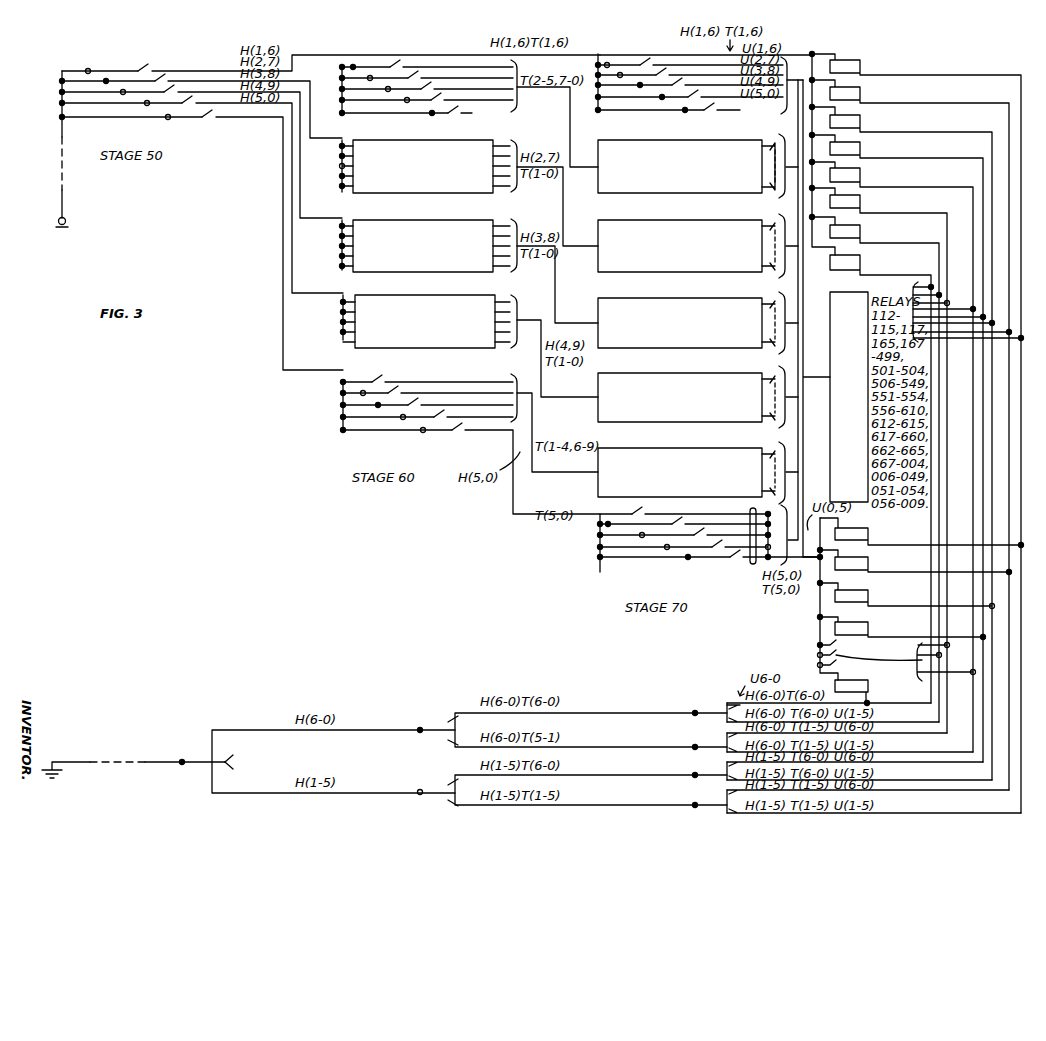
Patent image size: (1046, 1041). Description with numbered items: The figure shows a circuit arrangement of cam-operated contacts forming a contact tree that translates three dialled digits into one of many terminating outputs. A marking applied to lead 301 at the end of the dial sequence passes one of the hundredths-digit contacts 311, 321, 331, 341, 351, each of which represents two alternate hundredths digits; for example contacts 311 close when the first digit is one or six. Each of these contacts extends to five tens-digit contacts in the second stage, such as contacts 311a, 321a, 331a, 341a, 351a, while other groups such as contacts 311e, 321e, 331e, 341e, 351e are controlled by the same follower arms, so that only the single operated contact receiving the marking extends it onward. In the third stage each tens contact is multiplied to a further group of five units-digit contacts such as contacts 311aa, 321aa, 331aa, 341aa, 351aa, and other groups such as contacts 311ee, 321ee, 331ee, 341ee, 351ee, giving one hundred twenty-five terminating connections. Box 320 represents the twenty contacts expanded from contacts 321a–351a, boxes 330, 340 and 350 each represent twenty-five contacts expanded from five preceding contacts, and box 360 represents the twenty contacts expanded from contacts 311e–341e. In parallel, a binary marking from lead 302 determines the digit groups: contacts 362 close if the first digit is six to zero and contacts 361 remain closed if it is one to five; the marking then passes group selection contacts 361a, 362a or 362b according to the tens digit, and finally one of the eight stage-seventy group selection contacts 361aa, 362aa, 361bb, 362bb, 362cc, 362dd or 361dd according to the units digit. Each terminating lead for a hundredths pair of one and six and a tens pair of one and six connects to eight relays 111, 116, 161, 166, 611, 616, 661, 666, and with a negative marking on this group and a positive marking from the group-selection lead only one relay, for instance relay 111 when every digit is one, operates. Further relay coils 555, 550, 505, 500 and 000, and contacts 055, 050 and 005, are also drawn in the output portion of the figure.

The lead 301 is at (58, 130).
The lead 302 is at (150, 762).
The contacts 311 is at (123, 62).
The contacts 321 is at (150, 72).
The contacts 331 is at (166, 82).
The contacts 341 is at (182, 101).
The contacts 351 is at (204, 104).
The contacts 311a is at (383, 56).
The contacts 321a is at (401, 69).
The contacts 331a is at (421, 82).
The contacts 341a is at (434, 95).
The contacts 351a is at (451, 109).
The contacts 311aa is at (623, 56).
The contacts 321aa is at (651, 68).
The contacts 331aa is at (669, 79).
The contacts 341aa is at (687, 90).
The contacts 351aa is at (703, 103).
The contacts 311e is at (373, 376).
The contacts 321e is at (390, 386).
The contacts 331e is at (411, 398).
The contacts 341e is at (434, 416).
The contacts 351e is at (455, 418).
The contacts 311ee is at (635, 517).
The contacts 321ee is at (673, 524).
The contacts 331ee is at (696, 542).
The contacts 341ee is at (711, 554).
The contacts 351ee is at (733, 559).
The box 320 is at (680, 166).
The box 330 is at (680, 246).
The box 340 is at (680, 323).
The box 350 is at (680, 397).
The box 360 is at (680, 472).
The contacts 361 is at (217, 782).
The contacts 362 is at (217, 739).
The group selection contacts 361a is at (456, 742).
The group selection contacts 362a is at (458, 719).
The group selection contacts 362b is at (458, 782).
The group selection contacts 361aa is at (722, 720).
The group selection contacts 362aa is at (722, 704).
The group selection contacts 361bb is at (722, 750).
The group selection contacts 362bb is at (722, 733).
The group selection contacts 362cc is at (722, 778).
The group selection contacts 362dd is at (722, 791).
The group selection contacts 361dd is at (722, 812).
The relay 111 is at (855, 63).
The relay 116 is at (856, 95).
The relay 161 is at (856, 122).
The relay 166 is at (856, 150).
The relay 611 is at (856, 177).
The relay 616 is at (856, 204).
The relay 661 is at (856, 232).
The relay 666 is at (856, 262).
The relay 555 is at (866, 541).
The relay 550 is at (866, 570).
The relay 505 is at (866, 603).
The relay 500 is at (866, 635).
The relay 000 is at (866, 693).
The contact 055 is at (798, 643).
The contact 050 is at (798, 655).
The contact 005 is at (798, 668).